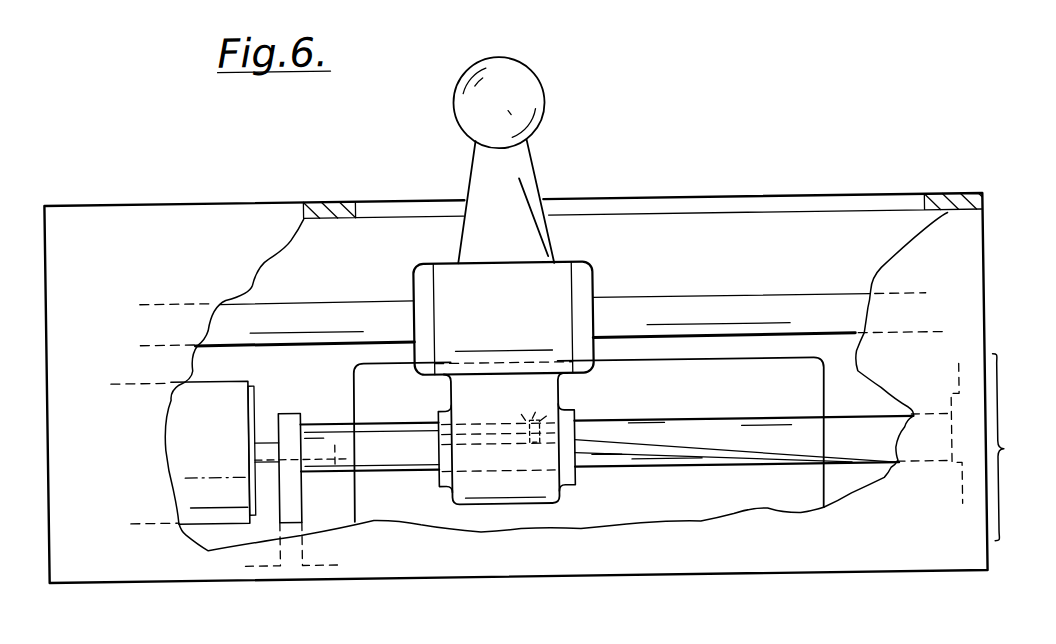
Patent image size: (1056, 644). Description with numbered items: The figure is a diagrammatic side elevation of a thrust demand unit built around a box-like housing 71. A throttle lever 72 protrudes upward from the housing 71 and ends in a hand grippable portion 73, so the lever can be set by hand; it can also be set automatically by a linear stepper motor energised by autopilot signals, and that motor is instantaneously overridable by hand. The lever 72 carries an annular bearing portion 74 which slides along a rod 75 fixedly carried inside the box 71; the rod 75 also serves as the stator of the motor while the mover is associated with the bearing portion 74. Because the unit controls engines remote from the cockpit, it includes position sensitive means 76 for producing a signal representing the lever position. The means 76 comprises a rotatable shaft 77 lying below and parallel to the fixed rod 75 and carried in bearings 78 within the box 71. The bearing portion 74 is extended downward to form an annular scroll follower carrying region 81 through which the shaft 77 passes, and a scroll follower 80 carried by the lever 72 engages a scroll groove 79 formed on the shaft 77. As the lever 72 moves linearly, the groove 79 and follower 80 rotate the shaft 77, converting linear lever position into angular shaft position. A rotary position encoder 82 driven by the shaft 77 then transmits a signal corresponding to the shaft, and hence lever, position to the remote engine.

The box-like housing 71 is at (975, 236).
The throttle lever 72 is at (553, 163).
The hand grippable portion 73 is at (549, 100).
The annular bearing portion 74 is at (554, 281).
The rod 75 is at (788, 305).
The position sensitive means 76 is at (1019, 447).
The rotatable shaft 77 is at (852, 430).
The bearings 78 is at (292, 517).
The scroll groove 79 is at (685, 450).
The scroll follower 80 is at (559, 405).
The annular scroll follower carrying region 81 is at (491, 478).
The rotary position encoder 82 is at (231, 418).